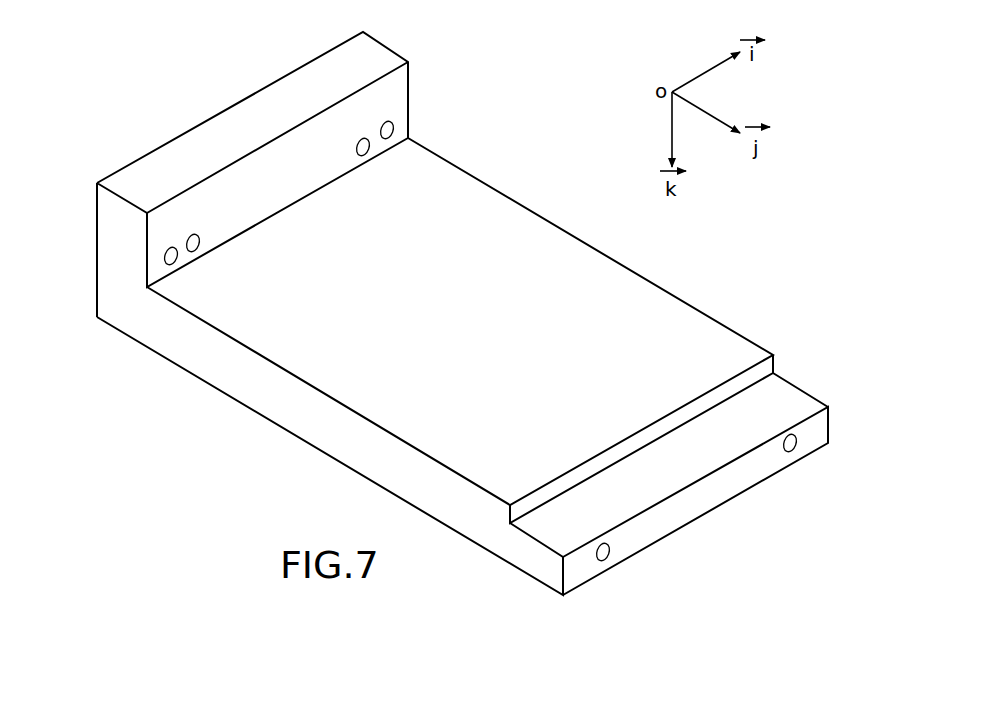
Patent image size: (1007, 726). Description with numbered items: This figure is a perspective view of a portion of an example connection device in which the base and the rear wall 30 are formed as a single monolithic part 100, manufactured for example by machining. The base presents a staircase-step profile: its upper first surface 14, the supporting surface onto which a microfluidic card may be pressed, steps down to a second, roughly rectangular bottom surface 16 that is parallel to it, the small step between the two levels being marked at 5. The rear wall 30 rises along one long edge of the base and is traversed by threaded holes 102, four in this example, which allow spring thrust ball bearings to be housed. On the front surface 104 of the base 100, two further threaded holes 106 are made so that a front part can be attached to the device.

The monolithic part 100 is at (298, 456).
The rear wall 30 is at (235, 203).
The threaded holes 102 is at (392, 128).
The first surface 14 is at (523, 233).
The step / ledge 5 is at (778, 371).
The bottom surface 16 is at (558, 535).
The front surface 104 is at (810, 435).
The threaded holes 106 is at (787, 455).